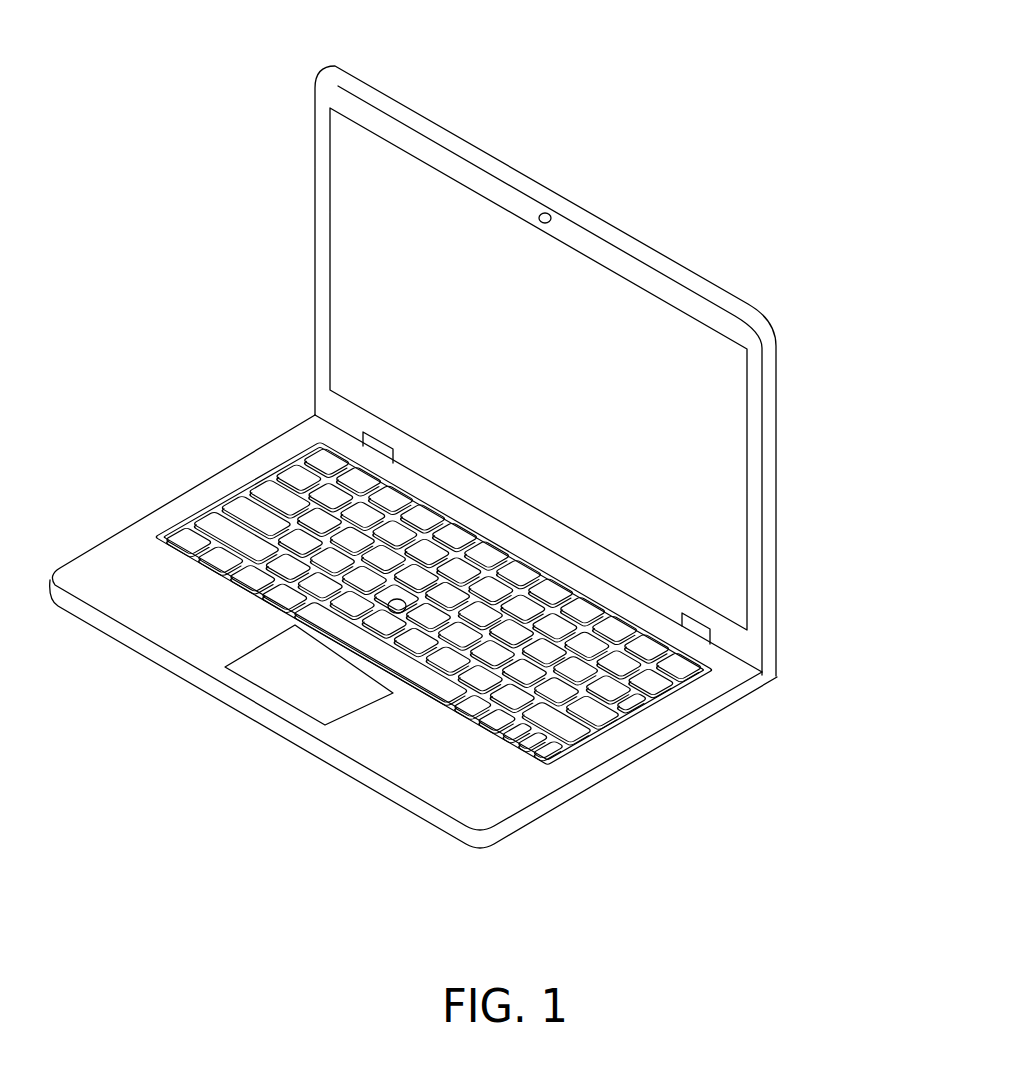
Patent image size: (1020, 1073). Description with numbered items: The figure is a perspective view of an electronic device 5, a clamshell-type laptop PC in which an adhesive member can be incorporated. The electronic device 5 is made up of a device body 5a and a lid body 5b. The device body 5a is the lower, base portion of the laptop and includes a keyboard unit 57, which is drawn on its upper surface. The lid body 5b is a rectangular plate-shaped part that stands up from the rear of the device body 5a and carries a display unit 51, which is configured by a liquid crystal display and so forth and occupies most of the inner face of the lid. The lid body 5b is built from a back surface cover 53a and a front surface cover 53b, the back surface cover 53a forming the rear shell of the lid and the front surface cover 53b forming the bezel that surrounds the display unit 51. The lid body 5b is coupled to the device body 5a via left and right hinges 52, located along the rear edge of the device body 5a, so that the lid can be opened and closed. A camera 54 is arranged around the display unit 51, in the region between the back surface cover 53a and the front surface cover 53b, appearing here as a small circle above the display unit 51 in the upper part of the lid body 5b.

The electronic device 5 is at (222, 45).
The device body 5a is at (108, 531).
The lid body 5b is at (607, 371).
The display unit 51 is at (510, 257).
The hinges 52 is at (373, 447).
The back surface cover 53a is at (777, 380).
The front surface cover 53b is at (755, 465).
The camera 54 is at (551, 221).
The keyboard unit 57 is at (242, 502).